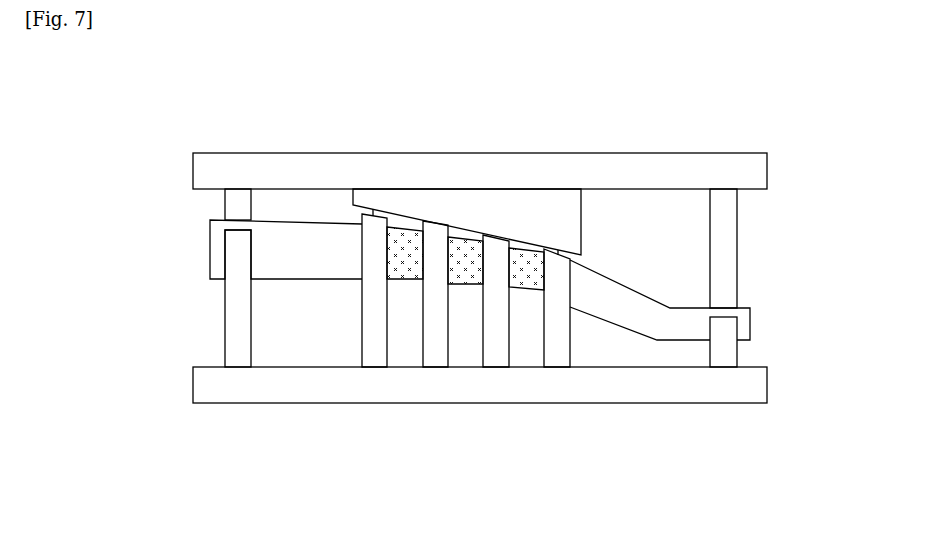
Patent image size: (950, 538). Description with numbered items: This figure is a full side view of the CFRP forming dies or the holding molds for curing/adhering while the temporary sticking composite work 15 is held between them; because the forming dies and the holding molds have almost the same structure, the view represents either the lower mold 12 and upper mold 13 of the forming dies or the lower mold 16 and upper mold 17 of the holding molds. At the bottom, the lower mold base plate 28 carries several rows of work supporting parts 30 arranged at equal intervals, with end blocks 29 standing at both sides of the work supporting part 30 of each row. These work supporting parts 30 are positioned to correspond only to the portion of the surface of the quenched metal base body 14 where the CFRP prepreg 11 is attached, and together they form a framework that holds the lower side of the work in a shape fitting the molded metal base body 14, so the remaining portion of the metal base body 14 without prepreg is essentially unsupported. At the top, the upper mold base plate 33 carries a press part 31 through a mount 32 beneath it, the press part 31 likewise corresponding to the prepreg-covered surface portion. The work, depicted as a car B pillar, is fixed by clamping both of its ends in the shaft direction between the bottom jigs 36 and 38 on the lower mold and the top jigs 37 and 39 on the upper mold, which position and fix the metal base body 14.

The CFRP prepreg 11 is at (540, 193).
The lower mold of CFRP forming dies 12 is at (480, 436).
The upper mold of CFRP forming dies 13 is at (480, 155).
The quenched metal base body 14 is at (292, 236).
The temporary sticking composite work 15 is at (480, 218).
The lower mold of holding molds for curing/adhering 16 is at (480, 418).
The upper mold of holding molds for curing/adhering 17 is at (480, 176).
The lower mold base plate 28 is at (275, 390).
The end blocks 29 is at (466, 363).
The work supporting parts 30 is at (558, 350).
The press part 31 is at (465, 229).
The mount 32 is at (498, 202).
The upper mold base plate 33 is at (388, 165).
The bottom jig 36 is at (233, 325).
The top jig 37 is at (233, 206).
The bottom jig 38 is at (727, 355).
The top jig 39 is at (728, 247).